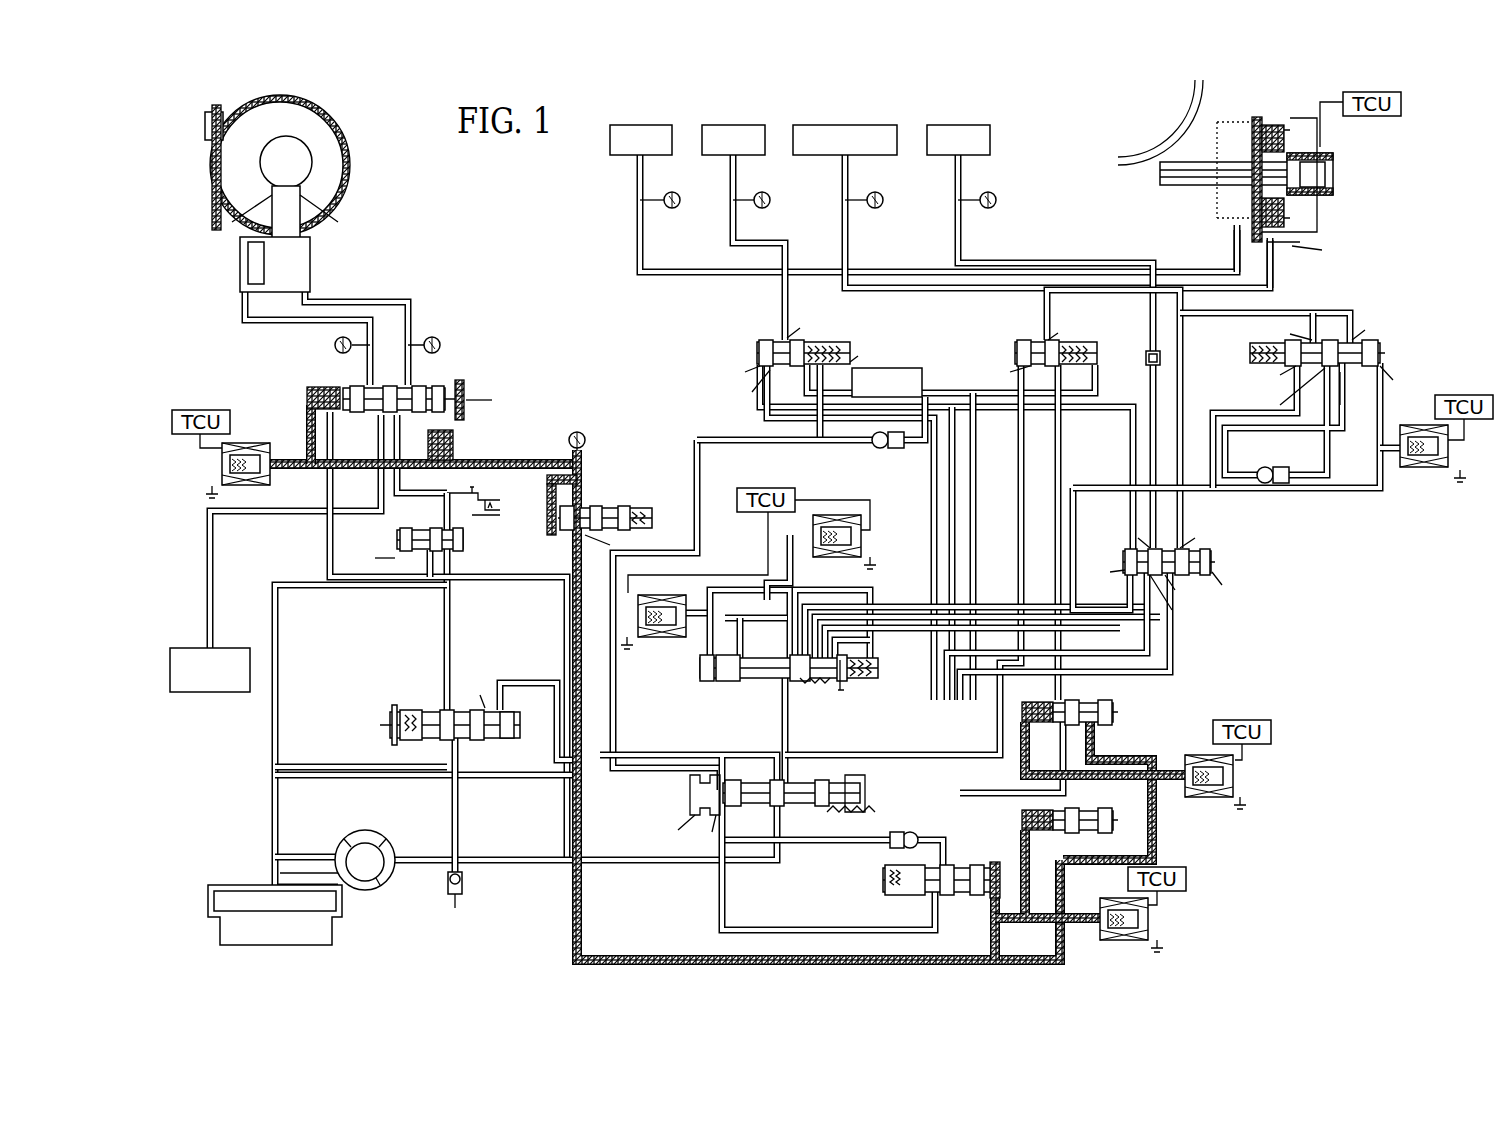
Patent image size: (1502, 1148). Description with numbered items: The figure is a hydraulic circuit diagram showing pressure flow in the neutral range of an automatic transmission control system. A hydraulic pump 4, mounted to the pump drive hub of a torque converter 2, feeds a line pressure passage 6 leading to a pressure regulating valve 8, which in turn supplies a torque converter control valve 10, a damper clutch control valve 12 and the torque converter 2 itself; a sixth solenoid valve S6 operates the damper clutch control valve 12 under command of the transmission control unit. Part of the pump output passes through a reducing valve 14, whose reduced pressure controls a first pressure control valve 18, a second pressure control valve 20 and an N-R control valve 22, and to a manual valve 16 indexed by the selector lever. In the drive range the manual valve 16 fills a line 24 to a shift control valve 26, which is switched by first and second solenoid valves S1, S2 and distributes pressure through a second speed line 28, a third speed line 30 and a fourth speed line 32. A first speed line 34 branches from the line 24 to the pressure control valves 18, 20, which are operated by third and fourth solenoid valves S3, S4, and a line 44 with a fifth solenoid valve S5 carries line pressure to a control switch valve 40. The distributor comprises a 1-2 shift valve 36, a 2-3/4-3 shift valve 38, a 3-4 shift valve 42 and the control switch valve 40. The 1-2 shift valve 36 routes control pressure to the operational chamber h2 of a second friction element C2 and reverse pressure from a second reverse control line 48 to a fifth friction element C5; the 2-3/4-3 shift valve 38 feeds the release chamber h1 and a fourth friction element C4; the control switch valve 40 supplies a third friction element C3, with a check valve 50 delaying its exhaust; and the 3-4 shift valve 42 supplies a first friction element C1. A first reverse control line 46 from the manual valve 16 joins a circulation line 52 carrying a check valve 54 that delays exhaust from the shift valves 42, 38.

The torque converter 2 is at (370, 120).
The hydraulic pump 4 is at (362, 912).
The line pressure passage 6 is at (452, 820).
The pressure regulating valve 8 is at (356, 722).
The torque converter control valve 10 is at (486, 540).
The damper clutch control valve 12 is at (492, 372).
The reducing valve 14 is at (625, 492).
The manual valve 16 is at (664, 798).
The first pressure control valve 18 is at (1014, 830).
The second pressure control valve 20 is at (1132, 700).
The N-R control valve 22 is at (860, 880).
The line 24 is at (784, 717).
The shift control valve 26 is at (718, 683).
The second speed line 28 is at (896, 607).
The third speed line 30 is at (1020, 560).
The fourth speed line 32 is at (906, 644).
The first speed line 34 is at (912, 758).
The 1-2 shift valve 36 is at (1214, 560).
The 2-3/4-3 shift valve 38 is at (1012, 346).
The control switch valve 40 is at (1392, 360).
The 3-4 shift valve 42 is at (757, 344).
The line 44 is at (1336, 492).
The first reverse control line 46 is at (715, 439).
The second reverse control line 48 is at (963, 812).
The check valve 50 is at (1265, 484).
The circulation line 52 is at (914, 368).
The check valve 54 is at (880, 450).
The first solenoid valve S1 is at (841, 501).
The second solenoid valve S2 is at (659, 656).
The third solenoid valve S3 is at (1170, 922).
The fourth solenoid valve S4 is at (1255, 781).
The fifth solenoid valve S5 is at (1428, 481).
The sixth solenoid valve S6 is at (242, 430).
The first friction element C1 is at (733, 125).
The second friction element C2 is at (1188, 216).
The third friction element C3 is at (958, 125).
The fourth friction element C4 is at (640, 125).
The fifth friction element C5 is at (848, 125).
The release chamber h1 is at (1232, 222).
The operational chamber h2 is at (1292, 218).